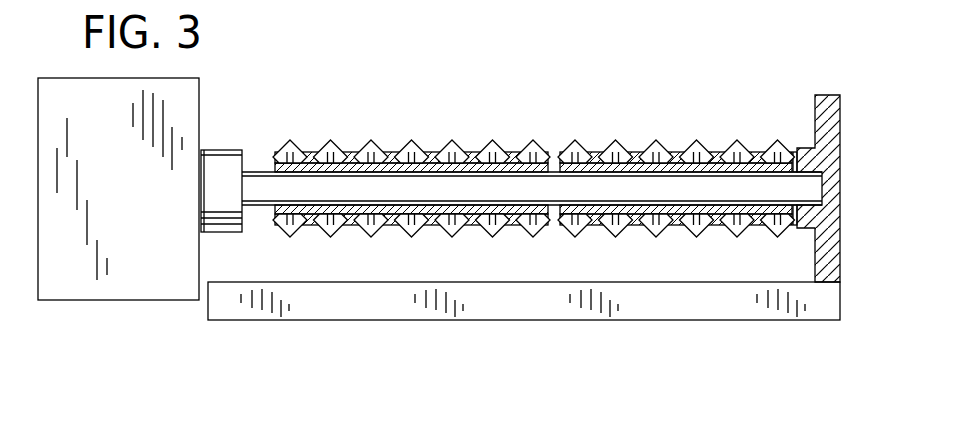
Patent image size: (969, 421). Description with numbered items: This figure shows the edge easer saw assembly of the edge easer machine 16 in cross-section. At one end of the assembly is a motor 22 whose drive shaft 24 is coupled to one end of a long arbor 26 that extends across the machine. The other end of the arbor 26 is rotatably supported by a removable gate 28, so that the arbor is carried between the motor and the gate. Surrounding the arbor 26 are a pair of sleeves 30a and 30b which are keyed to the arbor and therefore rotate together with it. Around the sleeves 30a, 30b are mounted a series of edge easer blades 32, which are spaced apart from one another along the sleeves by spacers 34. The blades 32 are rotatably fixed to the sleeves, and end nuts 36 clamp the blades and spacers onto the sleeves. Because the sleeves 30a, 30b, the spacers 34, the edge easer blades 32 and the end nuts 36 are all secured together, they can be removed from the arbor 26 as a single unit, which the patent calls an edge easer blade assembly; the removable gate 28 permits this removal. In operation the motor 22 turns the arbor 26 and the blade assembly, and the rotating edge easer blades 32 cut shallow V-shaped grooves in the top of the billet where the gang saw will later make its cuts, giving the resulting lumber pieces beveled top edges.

The edge easer machine 16 is at (716, 90).
The motor 22 is at (134, 210).
The drive shaft 24 is at (223, 228).
The arbor 26 is at (466, 200).
The removable gate 28 is at (825, 157).
The sleeve 30a is at (388, 222).
The sleeve 30b is at (633, 228).
The edge easer blades 32 is at (493, 140).
The spacers 34 is at (715, 228).
The end nuts 36 is at (284, 150).